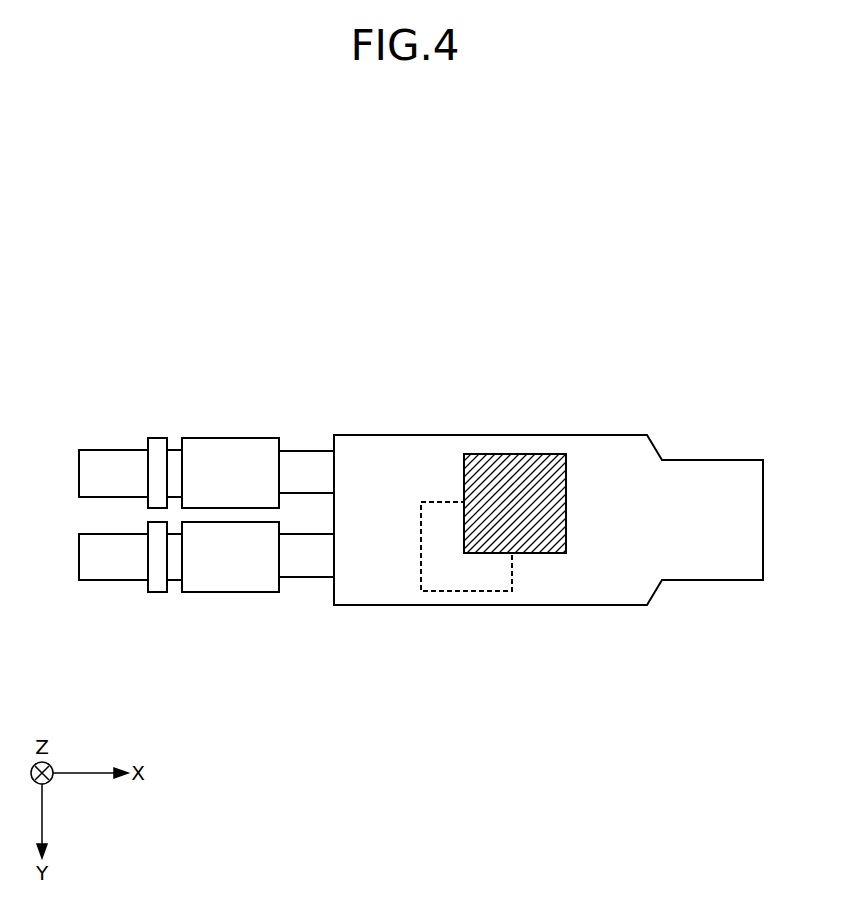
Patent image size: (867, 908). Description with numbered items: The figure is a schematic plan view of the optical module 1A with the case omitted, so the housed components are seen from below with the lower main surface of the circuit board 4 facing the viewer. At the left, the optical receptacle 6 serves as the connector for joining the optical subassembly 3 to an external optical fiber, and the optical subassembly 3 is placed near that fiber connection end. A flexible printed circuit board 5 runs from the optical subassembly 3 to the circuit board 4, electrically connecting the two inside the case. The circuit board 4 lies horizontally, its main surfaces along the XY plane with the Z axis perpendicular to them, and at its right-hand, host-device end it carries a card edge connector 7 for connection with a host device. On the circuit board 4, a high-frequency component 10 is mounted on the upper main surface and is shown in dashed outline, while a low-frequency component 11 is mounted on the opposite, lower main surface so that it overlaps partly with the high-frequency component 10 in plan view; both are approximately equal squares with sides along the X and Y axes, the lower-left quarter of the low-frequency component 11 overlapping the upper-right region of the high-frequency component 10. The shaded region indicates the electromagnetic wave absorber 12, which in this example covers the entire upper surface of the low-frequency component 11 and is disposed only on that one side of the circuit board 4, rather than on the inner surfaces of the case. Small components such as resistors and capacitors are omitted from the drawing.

The optical module 1A is at (55, 366).
The optical subassembly 3 is at (242, 437).
The circuit board 4 is at (610, 434).
The flexible printed circuit board 5 is at (312, 465).
The optical receptacle 6 is at (122, 448).
The card edge connector 7 is at (724, 480).
The high-frequency component 10 is at (473, 591).
The low-frequency component 11 is at (515, 452).
The electromagnetic wave absorber 12 is at (547, 495).